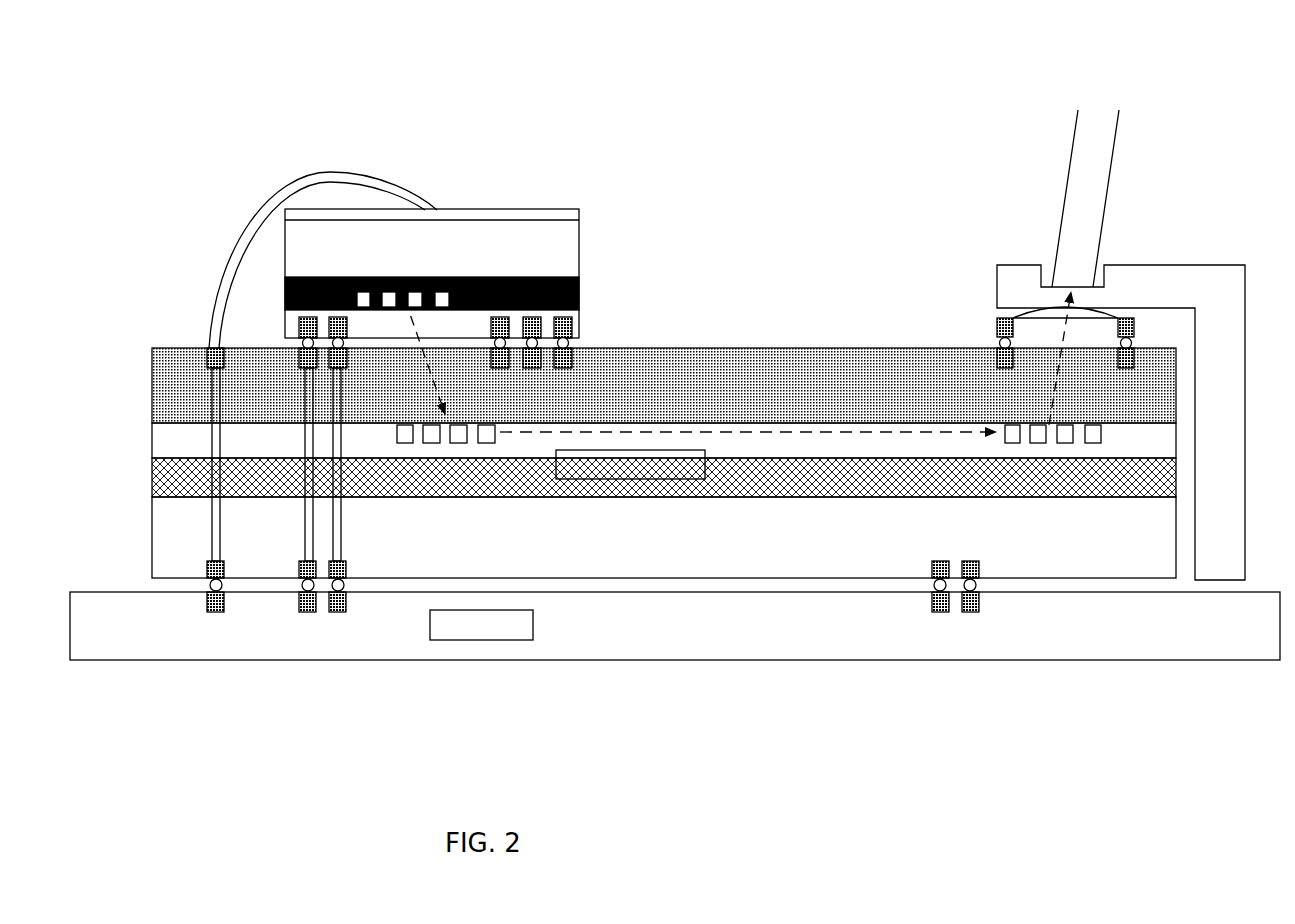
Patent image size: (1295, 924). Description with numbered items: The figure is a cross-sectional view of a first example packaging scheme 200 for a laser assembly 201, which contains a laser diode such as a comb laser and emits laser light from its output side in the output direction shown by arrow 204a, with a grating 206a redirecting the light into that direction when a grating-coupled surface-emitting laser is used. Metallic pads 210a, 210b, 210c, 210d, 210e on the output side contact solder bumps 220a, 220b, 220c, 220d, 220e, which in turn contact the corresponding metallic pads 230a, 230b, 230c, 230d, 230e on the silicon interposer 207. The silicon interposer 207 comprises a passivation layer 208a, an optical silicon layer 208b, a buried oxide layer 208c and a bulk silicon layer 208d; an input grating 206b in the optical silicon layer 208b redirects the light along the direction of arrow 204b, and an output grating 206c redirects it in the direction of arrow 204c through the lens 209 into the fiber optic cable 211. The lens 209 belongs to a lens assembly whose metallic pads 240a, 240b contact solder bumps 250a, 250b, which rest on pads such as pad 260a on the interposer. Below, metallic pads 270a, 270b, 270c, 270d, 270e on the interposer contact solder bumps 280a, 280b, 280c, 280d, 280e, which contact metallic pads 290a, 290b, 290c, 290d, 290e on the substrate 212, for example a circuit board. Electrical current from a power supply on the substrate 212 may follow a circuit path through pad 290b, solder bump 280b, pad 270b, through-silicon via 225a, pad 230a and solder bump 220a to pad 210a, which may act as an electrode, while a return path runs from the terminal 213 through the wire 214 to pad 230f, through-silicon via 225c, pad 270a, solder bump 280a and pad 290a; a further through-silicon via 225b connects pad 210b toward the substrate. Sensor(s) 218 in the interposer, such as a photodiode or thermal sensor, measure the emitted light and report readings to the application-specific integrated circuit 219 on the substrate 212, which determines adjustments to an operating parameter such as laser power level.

The packaging scheme 200 is at (192, 99).
The laser assembly 201 is at (557, 189).
The arrow 204a is at (417, 357).
The arrow 204b is at (740, 430).
The arrow 204c is at (1062, 378).
The grating 206a is at (404, 261).
The grating 206b is at (1130, 368).
The grating 206c is at (1049, 450).
The silicon interposer 207 is at (791, 296).
The passivation layer 208a is at (152, 395).
The optical silicon layer 208b is at (152, 435).
The buried oxide layer 208c is at (152, 472).
The bulk silicon layer 208d is at (152, 512).
The lens 209 is at (1100, 316).
The metallic pad 210a is at (299, 325).
The metallic pad 210b is at (347, 325).
The metallic pad 210c is at (491, 325).
The metallic pad 210d is at (540, 365).
The metallic pad 210e is at (570, 328).
The fiber optic cable 211 is at (1062, 215).
The substrate 212 is at (680, 660).
The terminal 213 is at (472, 209).
The wire 214 is at (328, 172).
The sensor(s) 218 is at (630, 464).
The application-specific integrated circuit 219 is at (481, 625).
The solder bump 220a is at (299, 356).
The solder bump 220b is at (347, 358).
The solder bump 220c is at (491, 358).
The solder bump 220d is at (525, 368).
The solder bump 220e is at (578, 352).
The through-silicon via 225a is at (305, 450).
The through-silicon via 225b is at (342, 514).
The through-silicon via 225c is at (220, 514).
The metallic pad 230a is at (307, 368).
The metallic pad 230b is at (345, 368).
The metallic pad 230c is at (498, 368).
The metallic pad 230d is at (532, 368).
The metallic pad 230e is at (573, 362).
The pad 230f is at (210, 368).
The metallic pad 240a is at (1000, 318).
The metallic pad 240b is at (1135, 318).
The solder bump 250a is at (999, 343).
The solder bump 250b is at (1132, 343).
The metallic pad 260a is at (997, 360).
The metallic pad 270a is at (208, 565).
The metallic pad 270b is at (299, 565).
The metallic pad 270c is at (347, 565).
The metallic pad 270d is at (932, 565).
The metallic pad 270e is at (979, 565).
The solder bump 280a is at (207, 587).
The solder bump 280b is at (299, 587).
The solder bump 280c is at (347, 587).
The solder bump 280d is at (932, 587).
The solder bump 280e is at (979, 587).
The metallic pad 290a is at (216, 612).
The metallic pad 290b is at (308, 612).
The metallic pad 290c is at (338, 612).
The metallic pad 290d is at (940, 612).
The metallic pad 290e is at (970, 612).